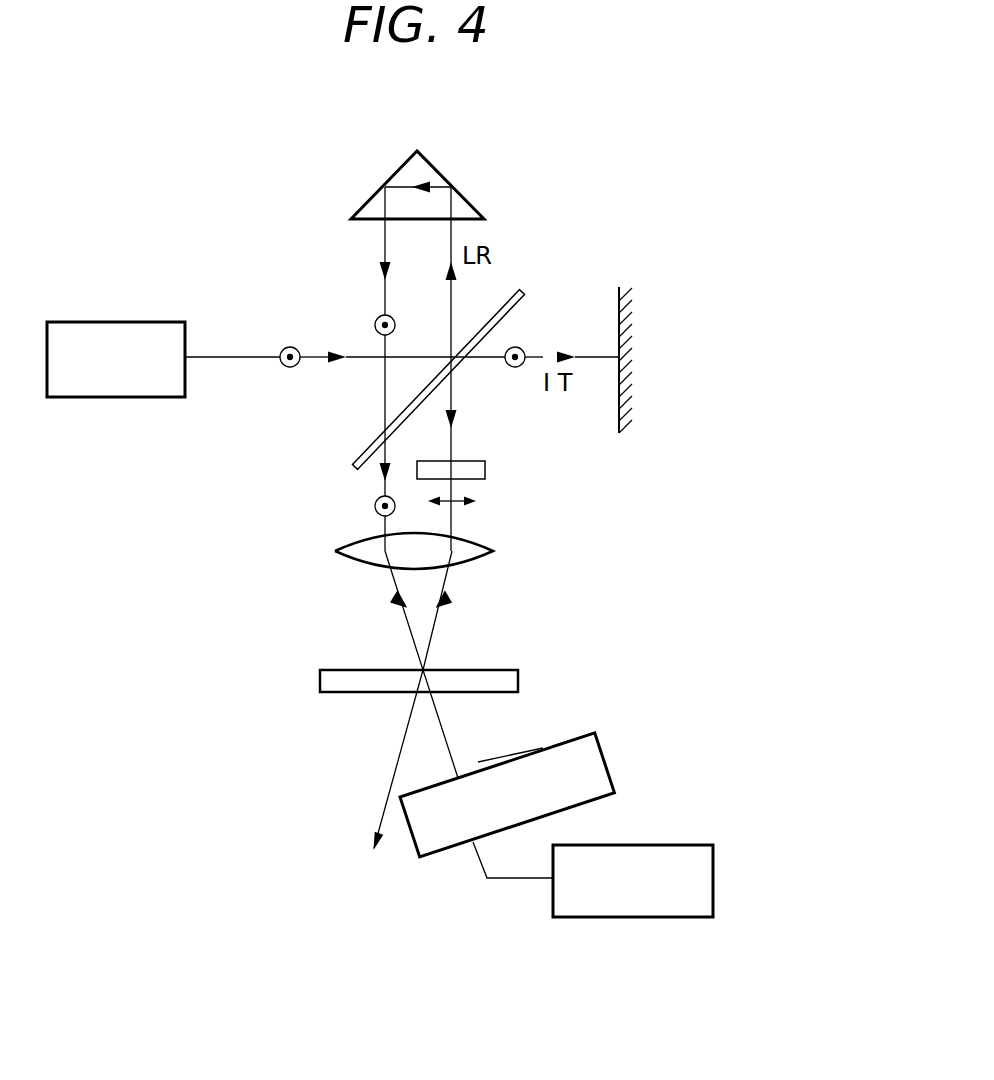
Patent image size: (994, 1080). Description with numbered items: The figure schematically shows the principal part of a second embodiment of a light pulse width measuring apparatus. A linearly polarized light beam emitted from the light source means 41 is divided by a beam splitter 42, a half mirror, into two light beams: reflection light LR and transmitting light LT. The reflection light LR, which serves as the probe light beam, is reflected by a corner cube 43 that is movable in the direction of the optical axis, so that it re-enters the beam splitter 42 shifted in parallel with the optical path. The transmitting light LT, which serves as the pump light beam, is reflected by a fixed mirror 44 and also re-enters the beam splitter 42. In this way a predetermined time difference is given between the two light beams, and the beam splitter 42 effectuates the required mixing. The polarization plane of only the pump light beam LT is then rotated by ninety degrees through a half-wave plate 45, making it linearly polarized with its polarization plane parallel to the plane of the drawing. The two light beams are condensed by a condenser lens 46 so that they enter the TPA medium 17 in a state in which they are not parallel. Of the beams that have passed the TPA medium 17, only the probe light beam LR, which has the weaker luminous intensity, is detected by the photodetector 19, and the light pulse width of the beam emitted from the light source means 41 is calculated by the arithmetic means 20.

The light source means 41 is at (77, 322).
The beam splitter 42 is at (523, 290).
The corner cube 43 is at (427, 157).
The fixed mirror 44 is at (620, 297).
The λ/2 plate 45 is at (485, 470).
The condenser lens 46 is at (493, 551).
The TPA medium 17 is at (518, 680).
The photodetector 19 is at (612, 742).
The arithmetic means 20 is at (700, 917).